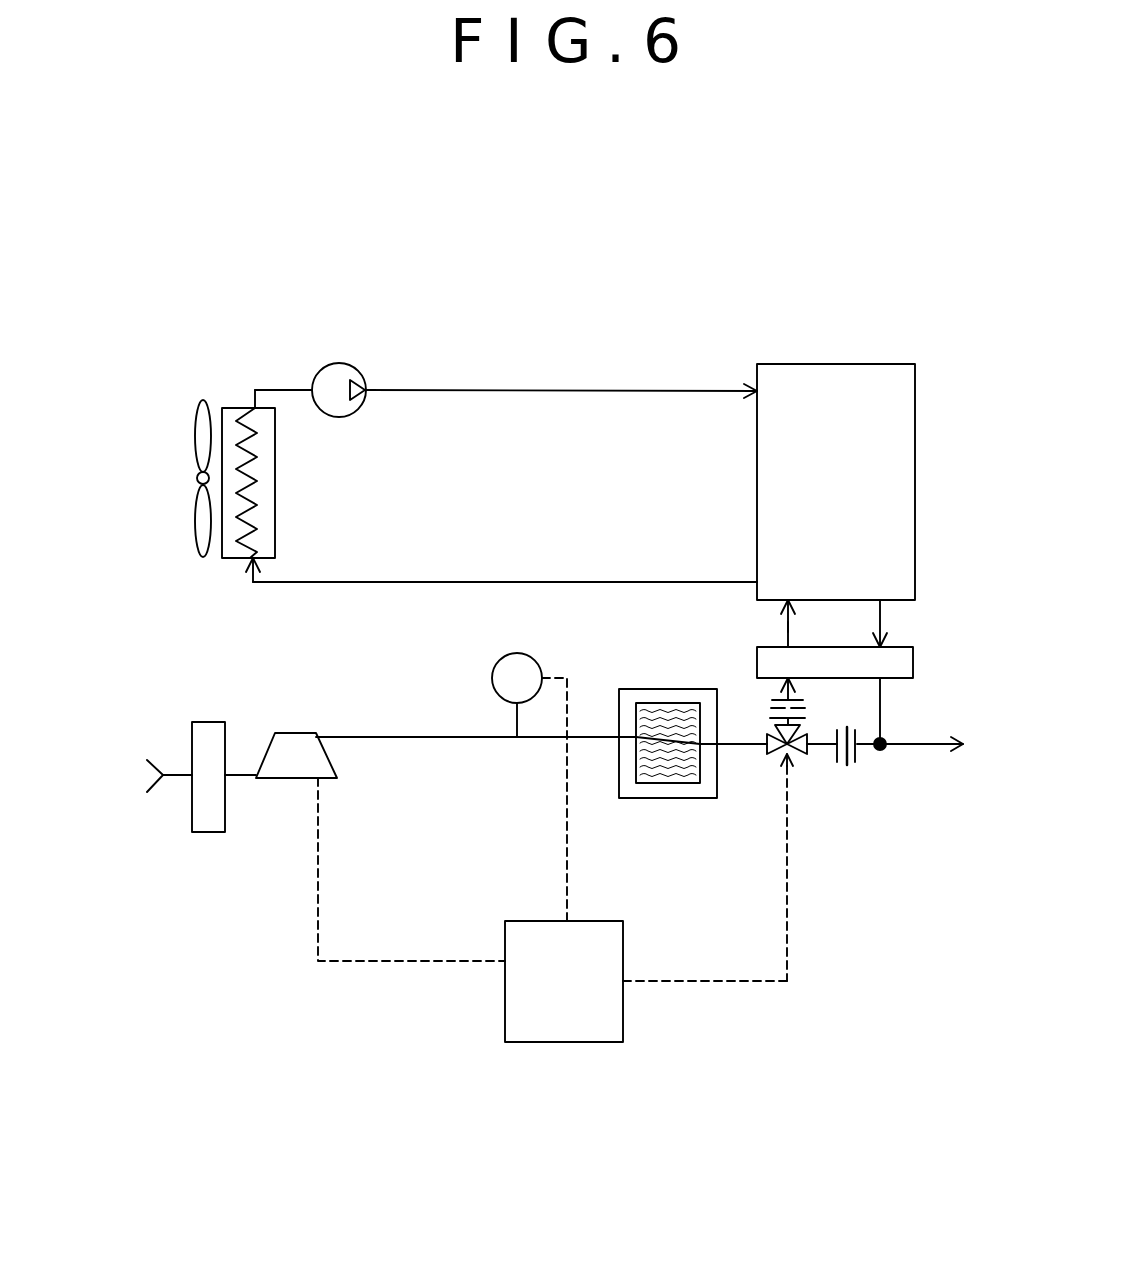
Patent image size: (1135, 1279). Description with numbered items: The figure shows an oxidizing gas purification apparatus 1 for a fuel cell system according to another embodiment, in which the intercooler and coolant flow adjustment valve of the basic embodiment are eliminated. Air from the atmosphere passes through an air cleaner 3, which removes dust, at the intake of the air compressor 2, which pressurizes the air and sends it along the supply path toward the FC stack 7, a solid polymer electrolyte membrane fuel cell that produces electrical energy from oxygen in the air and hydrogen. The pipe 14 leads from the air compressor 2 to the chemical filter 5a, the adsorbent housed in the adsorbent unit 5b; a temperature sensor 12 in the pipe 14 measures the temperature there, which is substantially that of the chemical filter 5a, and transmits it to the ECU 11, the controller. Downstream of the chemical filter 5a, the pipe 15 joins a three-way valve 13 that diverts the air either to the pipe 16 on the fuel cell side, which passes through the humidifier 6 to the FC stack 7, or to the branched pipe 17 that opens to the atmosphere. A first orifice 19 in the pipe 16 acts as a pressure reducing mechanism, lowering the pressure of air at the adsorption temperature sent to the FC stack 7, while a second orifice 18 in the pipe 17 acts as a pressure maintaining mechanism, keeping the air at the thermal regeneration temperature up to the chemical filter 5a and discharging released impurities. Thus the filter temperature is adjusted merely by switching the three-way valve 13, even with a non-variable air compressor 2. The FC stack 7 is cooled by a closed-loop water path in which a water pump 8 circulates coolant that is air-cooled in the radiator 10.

The oxidizing gas purification apparatus 1 is at (643, 300).
The air compressor 2 is at (285, 733).
The air cleaner 3 is at (208, 832).
The chemical filter 5a is at (665, 760).
The adsorbent unit 5b is at (640, 690).
The humidifier 6 is at (905, 647).
The FC stack 7 is at (800, 365).
The water pump 8 is at (345, 362).
The radiator 10 is at (237, 408).
The ECU 11 is at (595, 1042).
The temperature sensor 12 is at (497, 655).
The three-way valve 13 is at (798, 760).
The pipe 14 is at (538, 738).
The pipe 15 is at (748, 748).
The pipe 16 is at (788, 622).
The branched pipe 17 is at (820, 752).
The second orifice 18 is at (860, 755).
The first orifice 19 is at (772, 705).